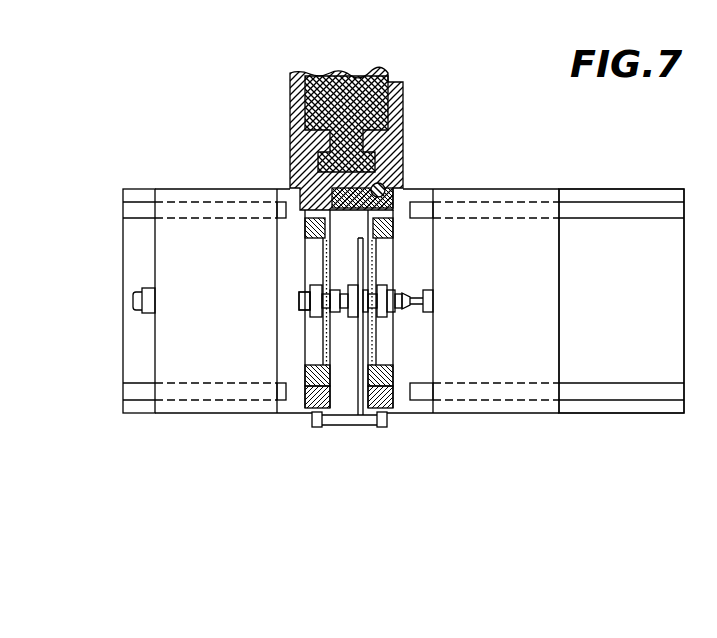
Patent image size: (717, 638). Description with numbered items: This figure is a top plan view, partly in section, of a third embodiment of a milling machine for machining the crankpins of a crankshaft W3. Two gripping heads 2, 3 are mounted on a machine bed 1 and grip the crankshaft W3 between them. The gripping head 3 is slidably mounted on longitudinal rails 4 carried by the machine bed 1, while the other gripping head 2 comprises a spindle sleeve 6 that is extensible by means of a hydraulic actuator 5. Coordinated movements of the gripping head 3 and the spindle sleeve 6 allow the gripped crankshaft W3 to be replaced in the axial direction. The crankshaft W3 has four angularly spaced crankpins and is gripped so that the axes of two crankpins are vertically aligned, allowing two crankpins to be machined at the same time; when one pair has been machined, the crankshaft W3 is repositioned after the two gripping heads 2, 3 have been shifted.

The machine bed 1 is at (660, 255).
The gripping head 2 is at (177, 332).
The gripping head 3 is at (516, 189).
The longitudinal rails 4 is at (613, 210).
The hydraulic actuator 5 is at (137, 303).
The spindle sleeve 6 is at (300, 300).
The crankshaft W3 is at (400, 317).